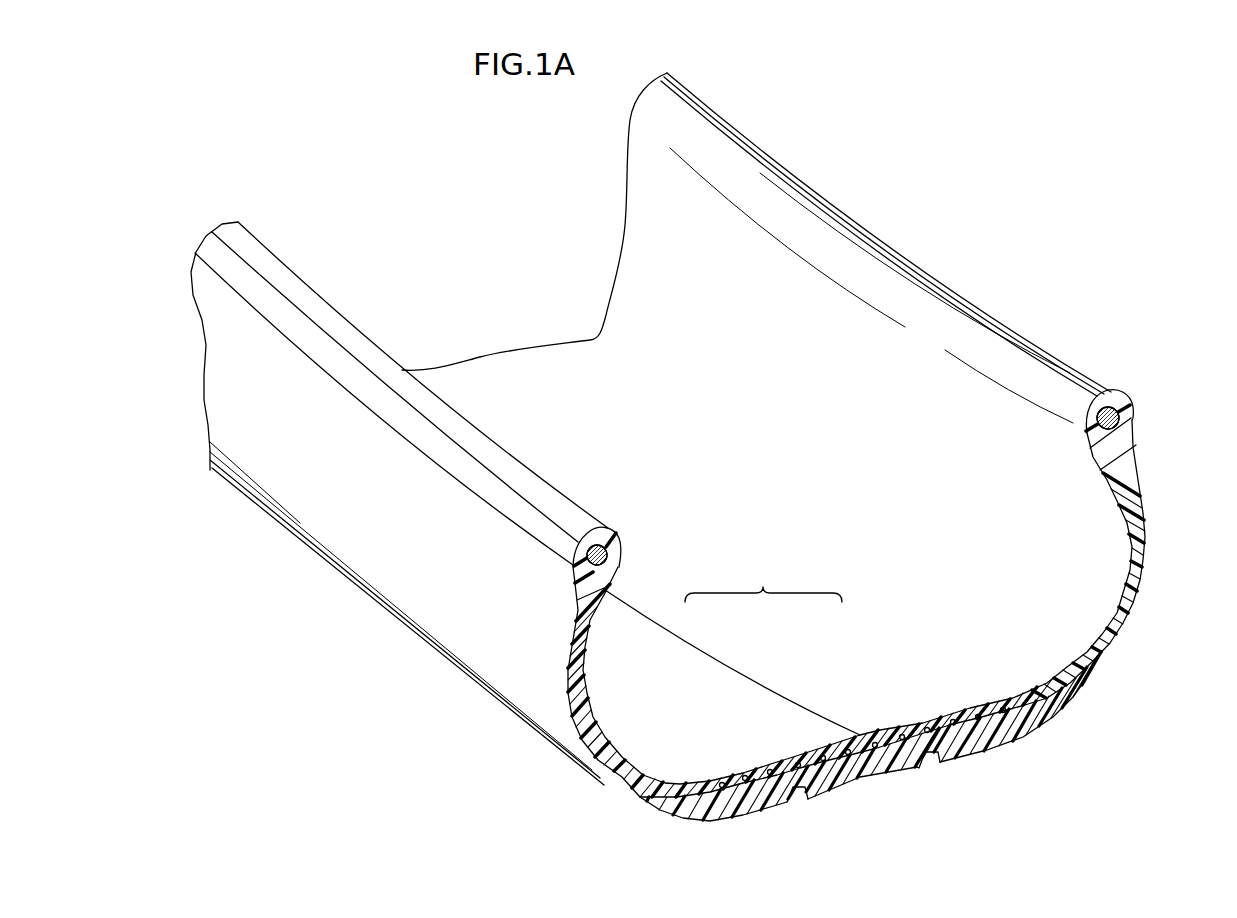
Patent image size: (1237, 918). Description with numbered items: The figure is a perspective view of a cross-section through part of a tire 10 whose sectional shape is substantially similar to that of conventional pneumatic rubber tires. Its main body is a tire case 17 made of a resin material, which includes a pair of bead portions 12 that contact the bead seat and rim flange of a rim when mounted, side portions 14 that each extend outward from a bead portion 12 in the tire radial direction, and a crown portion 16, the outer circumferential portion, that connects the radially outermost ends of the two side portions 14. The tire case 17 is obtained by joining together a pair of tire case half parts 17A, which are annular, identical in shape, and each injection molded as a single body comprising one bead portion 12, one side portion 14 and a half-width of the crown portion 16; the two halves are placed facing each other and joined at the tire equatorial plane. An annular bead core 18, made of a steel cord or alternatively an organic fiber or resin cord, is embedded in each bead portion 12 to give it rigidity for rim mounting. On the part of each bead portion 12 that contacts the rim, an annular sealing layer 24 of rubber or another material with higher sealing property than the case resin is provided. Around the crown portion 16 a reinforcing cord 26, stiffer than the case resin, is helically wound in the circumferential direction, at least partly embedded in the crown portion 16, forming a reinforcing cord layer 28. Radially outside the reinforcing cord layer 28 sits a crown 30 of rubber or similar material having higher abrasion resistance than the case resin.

The tire 10 is at (945, 203).
The bead portion 12 is at (561, 498).
The side portion 14 is at (510, 643).
The crown portion 16 is at (968, 730).
The tire case 17 is at (732, 648).
The tire case half part 17A is at (697, 672).
The bead core 18 is at (608, 557).
The sealing layer 24 is at (493, 490).
The reinforcing cord 26 is at (775, 780).
The reinforcing cord layer 28 is at (825, 762).
The crown 30 is at (1040, 735).